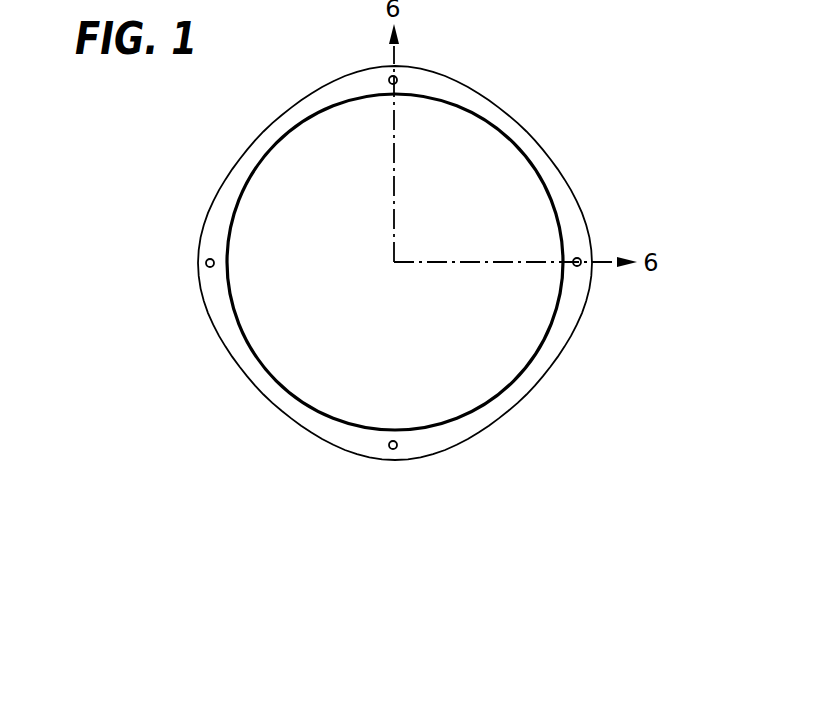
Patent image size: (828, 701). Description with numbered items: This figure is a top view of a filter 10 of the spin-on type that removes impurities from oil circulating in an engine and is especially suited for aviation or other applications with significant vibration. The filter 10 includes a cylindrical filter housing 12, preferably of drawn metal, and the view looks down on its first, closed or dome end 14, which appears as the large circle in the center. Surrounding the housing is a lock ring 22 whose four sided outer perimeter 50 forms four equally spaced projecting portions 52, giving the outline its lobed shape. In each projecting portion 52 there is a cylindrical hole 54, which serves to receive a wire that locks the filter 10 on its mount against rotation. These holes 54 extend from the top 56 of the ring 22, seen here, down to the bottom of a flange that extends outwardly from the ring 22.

The filter 10 is at (679, 403).
The filter housing 12 is at (300, 408).
The dome end 14 is at (268, 308).
The lock ring 22 is at (565, 323).
The outer perimeter 50 is at (510, 408).
The projecting portion 52 is at (432, 440).
The cylindrical hole 54 is at (207, 265).
The top 56 is at (533, 152).